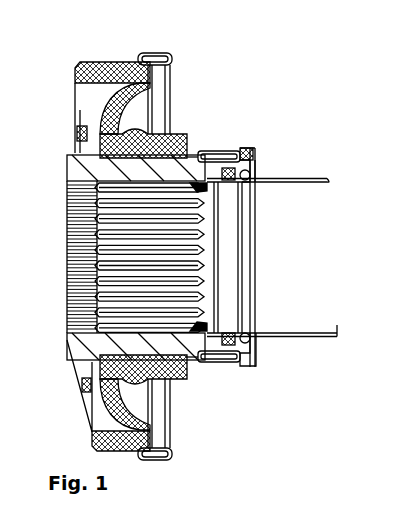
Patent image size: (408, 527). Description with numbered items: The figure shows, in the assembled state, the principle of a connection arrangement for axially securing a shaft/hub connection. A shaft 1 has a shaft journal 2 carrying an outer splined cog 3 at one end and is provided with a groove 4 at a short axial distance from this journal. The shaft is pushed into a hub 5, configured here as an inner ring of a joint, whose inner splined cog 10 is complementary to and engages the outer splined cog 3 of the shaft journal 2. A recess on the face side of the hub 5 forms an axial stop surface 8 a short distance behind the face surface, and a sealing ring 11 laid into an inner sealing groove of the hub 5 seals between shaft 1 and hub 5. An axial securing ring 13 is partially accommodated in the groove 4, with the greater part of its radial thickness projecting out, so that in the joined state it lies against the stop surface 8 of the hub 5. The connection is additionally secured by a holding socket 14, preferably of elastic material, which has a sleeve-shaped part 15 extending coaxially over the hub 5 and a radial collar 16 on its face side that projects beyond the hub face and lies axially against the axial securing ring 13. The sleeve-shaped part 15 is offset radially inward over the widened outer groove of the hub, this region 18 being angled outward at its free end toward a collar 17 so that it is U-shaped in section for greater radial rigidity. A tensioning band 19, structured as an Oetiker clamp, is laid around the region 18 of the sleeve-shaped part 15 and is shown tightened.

The shaft 1 is at (292, 272).
The shaft journal 2 is at (202, 213).
The outer splined cog 3 is at (190, 250).
The groove 4 is at (327, 182).
The hub 5 is at (190, 154).
The axial stop surface 8 is at (235, 333).
The inner splined cog 10 is at (73, 157).
The sealing ring 11 is at (257, 350).
The axial securing ring 13 is at (245, 220).
The holding socket 14 is at (255, 157).
The sleeve-shaped part 15 is at (262, 133).
The radial collar 16 is at (250, 173).
The collar 17 is at (200, 151).
The region reduced in diameter 18 is at (217, 151).
The tensioning band 19 is at (240, 133).